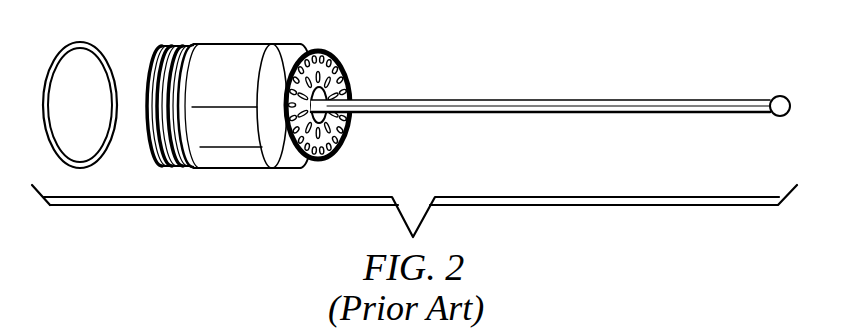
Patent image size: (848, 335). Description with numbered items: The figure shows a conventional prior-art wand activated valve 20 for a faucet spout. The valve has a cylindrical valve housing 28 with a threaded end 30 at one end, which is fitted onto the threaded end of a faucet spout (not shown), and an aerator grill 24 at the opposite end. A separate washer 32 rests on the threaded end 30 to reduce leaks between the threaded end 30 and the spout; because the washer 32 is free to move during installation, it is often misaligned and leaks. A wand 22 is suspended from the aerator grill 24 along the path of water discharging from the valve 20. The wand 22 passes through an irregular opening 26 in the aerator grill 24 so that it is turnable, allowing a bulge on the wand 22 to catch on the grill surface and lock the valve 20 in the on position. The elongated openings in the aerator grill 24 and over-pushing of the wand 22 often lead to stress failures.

The wand activated valve 20 is at (554, 41).
The wand 22 is at (672, 99).
The aerator grill 24 is at (337, 58).
The irregular opening 26 is at (344, 85).
The cylindrical valve housing 28 is at (265, 44).
The threaded end 30 is at (187, 46).
The washer 32 is at (88, 164).